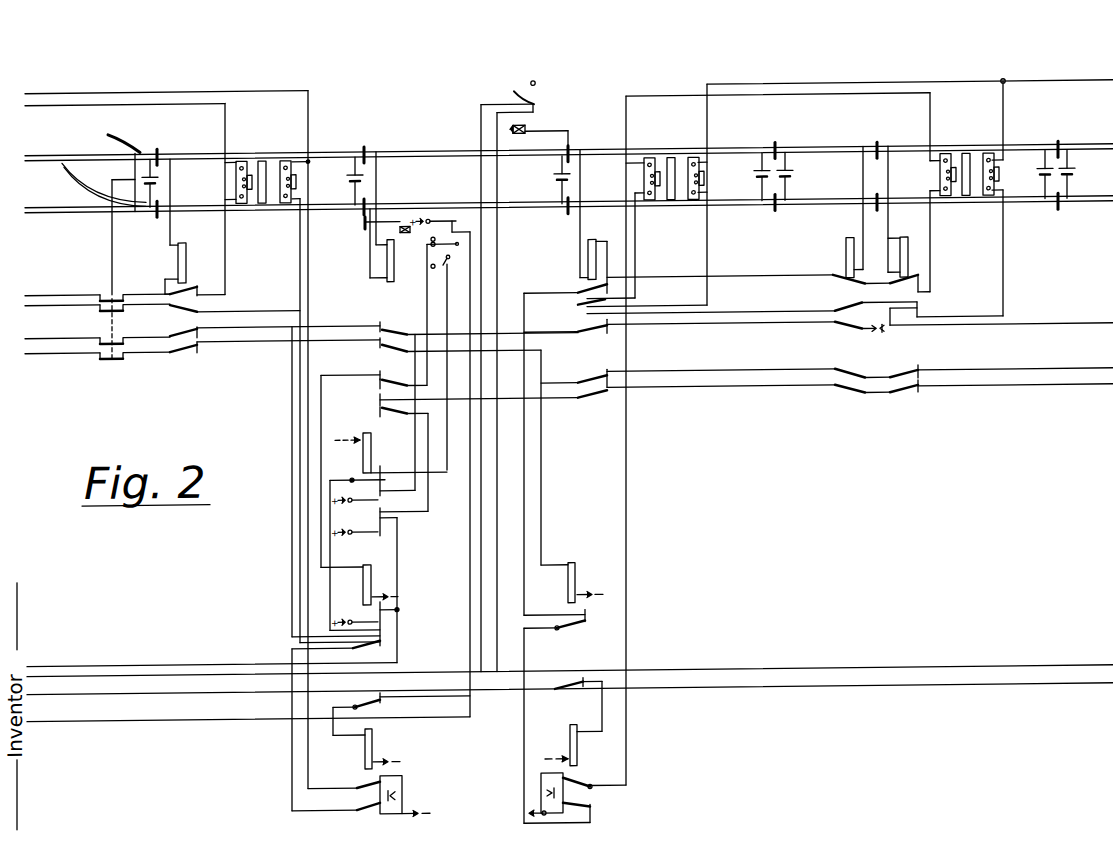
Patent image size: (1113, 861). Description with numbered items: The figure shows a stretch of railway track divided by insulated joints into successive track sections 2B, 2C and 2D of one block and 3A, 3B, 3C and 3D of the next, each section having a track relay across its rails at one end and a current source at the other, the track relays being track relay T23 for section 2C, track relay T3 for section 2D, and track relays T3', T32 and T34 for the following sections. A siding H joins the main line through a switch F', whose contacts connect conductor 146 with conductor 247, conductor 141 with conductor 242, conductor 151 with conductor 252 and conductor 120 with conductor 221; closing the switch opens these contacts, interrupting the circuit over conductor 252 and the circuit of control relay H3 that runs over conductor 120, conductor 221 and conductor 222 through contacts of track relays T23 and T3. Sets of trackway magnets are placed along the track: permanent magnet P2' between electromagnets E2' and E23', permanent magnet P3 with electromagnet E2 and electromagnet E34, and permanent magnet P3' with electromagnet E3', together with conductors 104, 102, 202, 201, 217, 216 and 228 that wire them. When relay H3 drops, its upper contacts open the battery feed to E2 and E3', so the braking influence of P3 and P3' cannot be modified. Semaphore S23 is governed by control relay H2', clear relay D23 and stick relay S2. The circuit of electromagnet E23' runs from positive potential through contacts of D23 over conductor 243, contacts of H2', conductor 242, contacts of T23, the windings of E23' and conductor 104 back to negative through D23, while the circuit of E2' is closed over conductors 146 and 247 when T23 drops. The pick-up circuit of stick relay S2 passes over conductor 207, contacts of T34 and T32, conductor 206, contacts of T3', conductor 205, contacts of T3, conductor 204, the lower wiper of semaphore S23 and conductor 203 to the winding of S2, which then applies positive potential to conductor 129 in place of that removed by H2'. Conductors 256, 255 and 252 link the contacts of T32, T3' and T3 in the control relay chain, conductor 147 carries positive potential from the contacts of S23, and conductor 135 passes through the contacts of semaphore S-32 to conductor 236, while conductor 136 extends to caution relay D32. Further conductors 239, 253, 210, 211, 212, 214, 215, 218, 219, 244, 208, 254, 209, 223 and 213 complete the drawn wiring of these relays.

The track section 2B is at (569, 178).
The track section 2C is at (251, 180).
The track section 2D is at (410, 180).
The track section 3A is at (650, 177).
The track section 3B is at (790, 176).
The track section 3C is at (940, 175).
The track section 3D is at (1069, 175).
The conductor 104 is at (40, 94).
The supply wire 102 is at (46, 108).
The supply wire 202 is at (1093, 90).
The supply wire 201 is at (802, 102).
The siding H is at (124, 163).
The switch F' is at (104, 228).
The track relay T23 is at (188, 262).
The trackway electromagnet E2' is at (240, 170).
The permanent magnet P2' is at (264, 170).
The trackway electromagnet E23' is at (292, 170).
The track relay T3 is at (380, 214).
The semaphore S23 is at (417, 237).
The semaphore S-32 is at (525, 148).
The conductor 135 is at (481, 139).
The conductor 236 is at (498, 190).
The wire 239 is at (1090, 700).
The conductor 136 is at (314, 695).
The trackway electromagnet E2 is at (650, 171).
The permanent magnet P3 is at (669, 171).
The electromagnet E34 is at (844, 168).
The track relay T3' is at (597, 221).
The wire 217 is at (708, 250).
The trackway electromagnet E3' is at (946, 165).
The permanent magnet P3' is at (967, 165).
The track relay T32 is at (846, 251).
The track relay T34 is at (900, 211).
The wire 216 is at (931, 266).
The wire 228 is at (1004, 267).
The conductor 146 is at (37, 297).
The conductor 141 is at (45, 308).
The conductor 151 is at (45, 341).
The conductor 120 is at (45, 356).
The conductor 247 is at (126, 293).
The conductor 242 is at (235, 313).
The relay contact 244 is at (172, 333).
The conductor 221 is at (231, 346).
The conductor 252 is at (318, 328).
The wire 253 is at (414, 337).
The conductor 204 is at (427, 301).
The conductor 222 is at (542, 357).
The conductor 205 is at (409, 386).
The wire 210 is at (548, 406).
The conductor 206 is at (679, 379).
The conductor 207 is at (1063, 379).
The wire 211 is at (688, 396).
The wire 212 is at (1066, 398).
The wire 214 is at (562, 298).
The wire 215 is at (651, 288).
The wire 218 is at (715, 320).
The conductor 255 is at (538, 337).
The conductor 256 is at (727, 333).
The wire 219 is at (1065, 336).
The wire 208 is at (322, 410).
The conductor 203 is at (448, 478).
The stick relay S2 is at (391, 464).
The relay contact 254 is at (410, 437).
The wire 209 is at (432, 516).
The conductor 129 is at (74, 667).
The wire 223 is at (329, 560).
The control relay H2' is at (380, 585).
The conductor 147 is at (74, 742).
The conductor 243 is at (285, 746).
The clear relay D23 is at (397, 772).
The wire 213 is at (523, 760).
The caution relay D32 is at (576, 747).
The control relay H3 is at (572, 582).